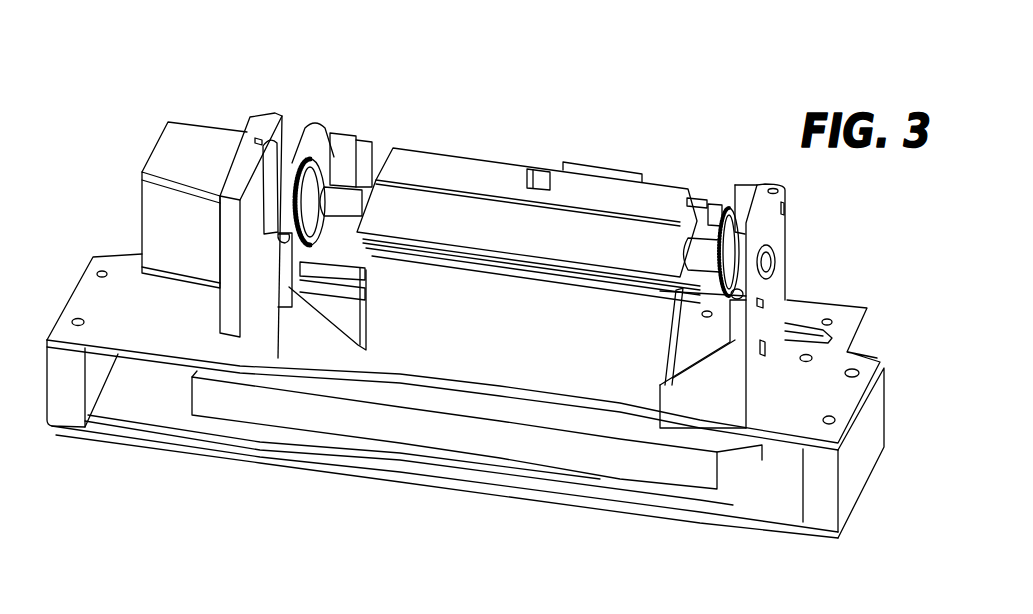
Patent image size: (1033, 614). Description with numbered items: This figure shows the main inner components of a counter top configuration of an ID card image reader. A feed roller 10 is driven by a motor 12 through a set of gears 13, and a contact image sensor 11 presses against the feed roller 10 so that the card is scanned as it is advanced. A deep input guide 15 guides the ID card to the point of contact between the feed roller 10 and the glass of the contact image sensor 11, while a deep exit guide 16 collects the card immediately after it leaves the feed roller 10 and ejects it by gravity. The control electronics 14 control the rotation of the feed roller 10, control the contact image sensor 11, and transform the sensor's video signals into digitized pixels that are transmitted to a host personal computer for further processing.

The feed roller 10 is at (460, 220).
The contact image sensor 11 is at (697, 200).
The motor 12 is at (200, 155).
The set of gears 13 is at (280, 145).
The control electronics 14 is at (370, 417).
The deep input guide 15 is at (670, 212).
The deep exit guide 16 is at (548, 362).